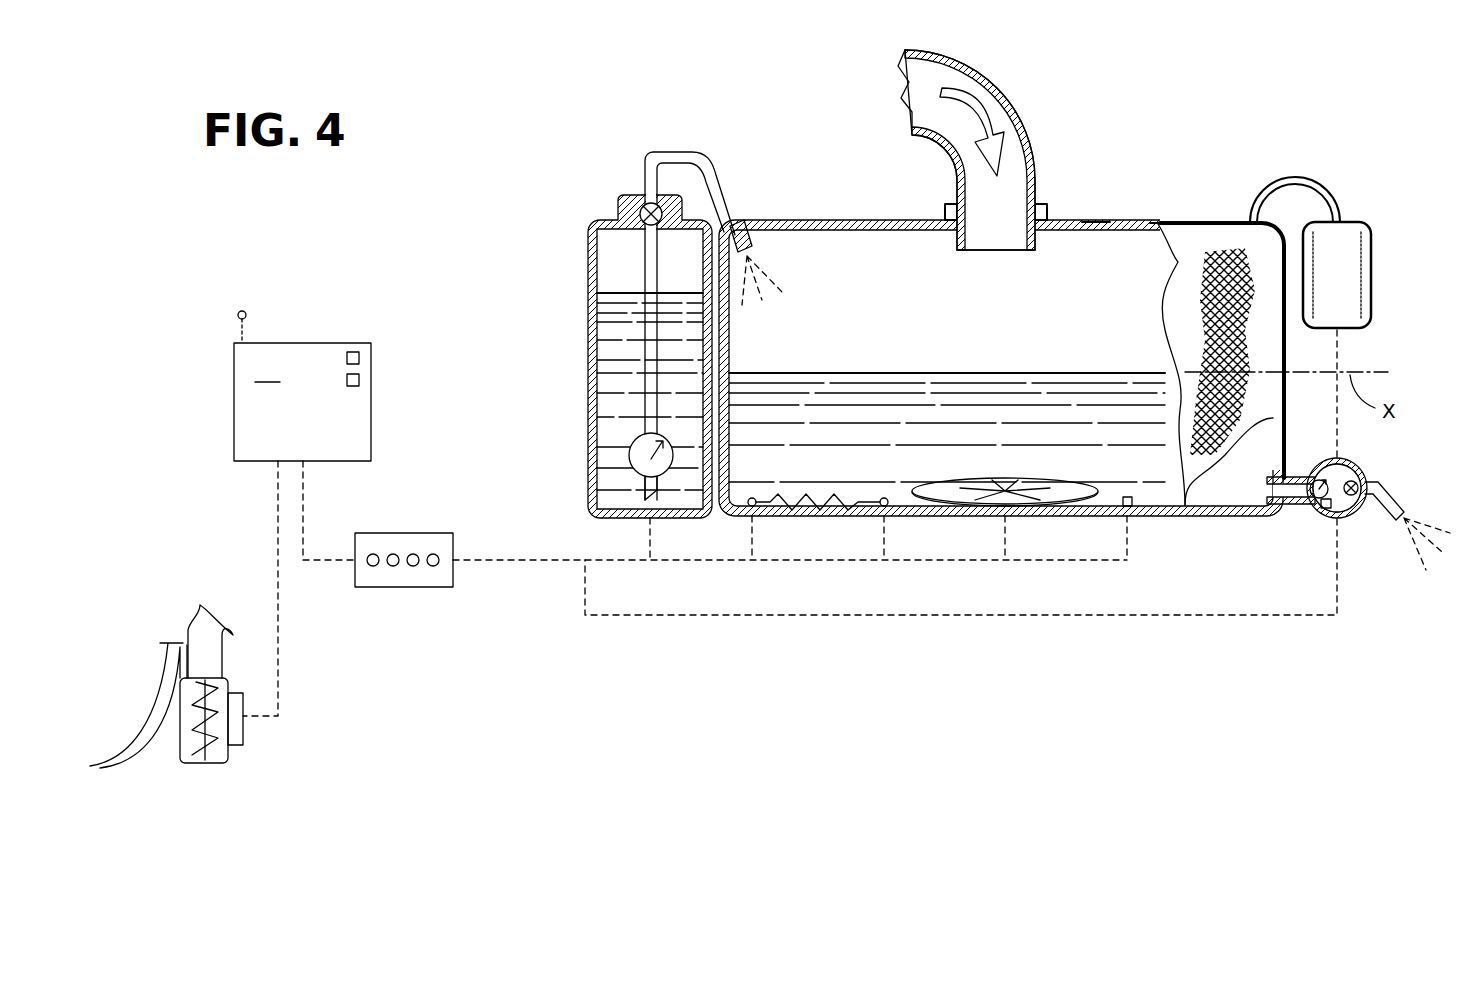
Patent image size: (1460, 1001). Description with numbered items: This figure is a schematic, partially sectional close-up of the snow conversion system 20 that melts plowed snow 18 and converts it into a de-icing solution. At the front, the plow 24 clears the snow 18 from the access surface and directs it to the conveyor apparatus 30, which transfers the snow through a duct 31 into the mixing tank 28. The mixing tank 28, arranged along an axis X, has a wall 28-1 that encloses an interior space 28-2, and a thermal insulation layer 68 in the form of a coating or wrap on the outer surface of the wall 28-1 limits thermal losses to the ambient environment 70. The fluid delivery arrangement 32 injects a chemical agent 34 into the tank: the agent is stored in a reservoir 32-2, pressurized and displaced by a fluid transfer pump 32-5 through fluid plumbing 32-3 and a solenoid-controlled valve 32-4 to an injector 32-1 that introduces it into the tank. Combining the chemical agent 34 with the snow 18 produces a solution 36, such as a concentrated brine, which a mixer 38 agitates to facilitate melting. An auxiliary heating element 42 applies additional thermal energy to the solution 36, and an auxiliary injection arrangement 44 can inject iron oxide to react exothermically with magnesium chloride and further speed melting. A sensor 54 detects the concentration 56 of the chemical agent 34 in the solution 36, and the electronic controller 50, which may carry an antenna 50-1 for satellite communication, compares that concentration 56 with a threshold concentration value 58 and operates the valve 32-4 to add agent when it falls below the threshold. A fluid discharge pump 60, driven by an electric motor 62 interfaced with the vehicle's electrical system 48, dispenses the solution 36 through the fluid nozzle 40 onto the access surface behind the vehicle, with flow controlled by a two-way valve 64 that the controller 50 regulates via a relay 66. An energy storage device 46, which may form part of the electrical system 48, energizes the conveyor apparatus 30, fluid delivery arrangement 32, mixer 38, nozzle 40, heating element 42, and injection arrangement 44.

The snow 18 is at (985, 118).
The snow conversion system 20 is at (430, 690).
The plow 24 is at (160, 712).
The mixing tank 28 is at (1195, 220).
The wall 28-1 is at (1088, 220).
The interior space 28-2 is at (1168, 220).
The conveyor apparatus 30 is at (257, 757).
The duct 31 is at (972, 72).
The fluid delivery arrangement 32 is at (669, 299).
The injector 32-1 is at (750, 230).
The reservoir 32-2 is at (592, 380).
The fluid plumbing 32-3 is at (716, 162).
The solenoid-controlled valve 32-4 is at (636, 207).
The fluid transfer pump 32-5 is at (632, 452).
The chemical agent 34 is at (622, 326).
The solution 36 is at (960, 416).
The mixer 38 is at (932, 490).
The fluid nozzle 40 is at (1392, 492).
The auxiliary heating element 42 is at (808, 505).
The auxiliary injection arrangement 44 is at (1355, 215).
The energy storage device 46 is at (405, 588).
The electrical system 48 is at (330, 574).
The electronic controller 50 is at (338, 369).
The antenna 50-1 is at (246, 313).
The sensor 54 is at (1133, 506).
The concentration 56 is at (360, 356).
The threshold concentration value 58 is at (360, 380).
The fluid discharge pump 60 is at (1312, 508).
The electric motor 62 is at (1322, 512).
The 2-way valve 64 is at (1353, 500).
The relay 66 is at (1352, 470).
The thermal insulation layer 68 is at (1228, 248).
The ambient environment 70 is at (1418, 290).